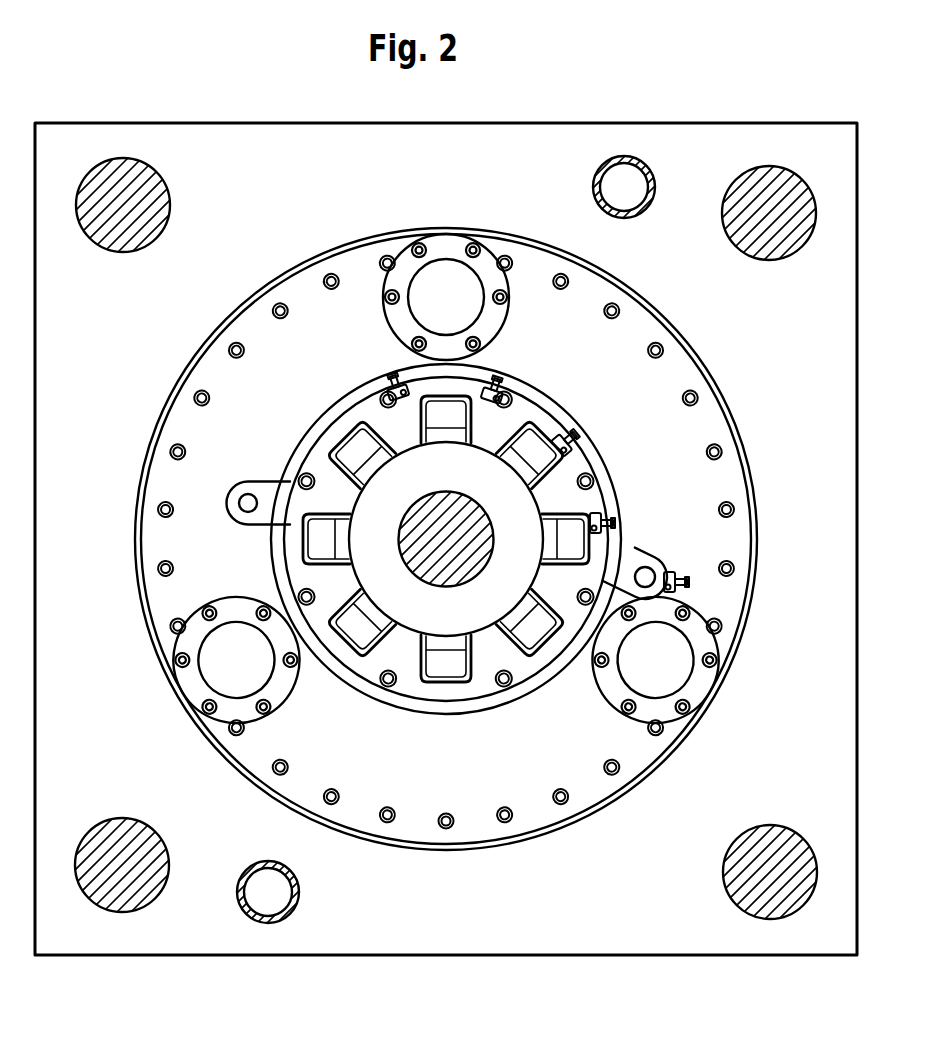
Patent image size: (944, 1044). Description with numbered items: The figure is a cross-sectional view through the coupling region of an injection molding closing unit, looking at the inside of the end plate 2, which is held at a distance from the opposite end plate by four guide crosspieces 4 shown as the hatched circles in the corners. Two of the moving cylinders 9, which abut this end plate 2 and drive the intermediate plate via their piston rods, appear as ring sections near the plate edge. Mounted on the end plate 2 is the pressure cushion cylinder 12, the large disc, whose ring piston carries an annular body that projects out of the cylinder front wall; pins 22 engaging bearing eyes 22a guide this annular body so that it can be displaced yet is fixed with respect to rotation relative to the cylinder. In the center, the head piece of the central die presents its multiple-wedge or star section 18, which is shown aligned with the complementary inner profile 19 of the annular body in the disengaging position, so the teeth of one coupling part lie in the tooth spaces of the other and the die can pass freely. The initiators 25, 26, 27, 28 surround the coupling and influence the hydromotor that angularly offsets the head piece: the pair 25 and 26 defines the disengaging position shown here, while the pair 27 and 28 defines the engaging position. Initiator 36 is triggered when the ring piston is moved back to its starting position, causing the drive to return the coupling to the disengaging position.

The end plate 2 is at (235, 168).
The guide crosspiece 4 is at (102, 195).
The moving cylinder 9 is at (634, 180).
The pressure cushion cylinder 12 is at (622, 335).
The multiple-wedge or star section 18 is at (357, 632).
The inner profile 19 is at (482, 635).
The pin 22 is at (244, 510).
The bearing eye 22a is at (246, 500).
The initiator 25 is at (602, 520).
The initiator 26 is at (568, 442).
The initiator 27 is at (502, 387).
The initiator 28 is at (387, 388).
The initiator 36 is at (683, 580).